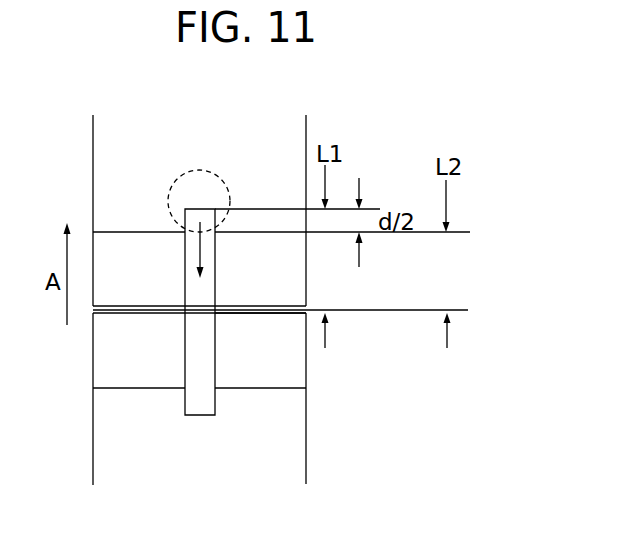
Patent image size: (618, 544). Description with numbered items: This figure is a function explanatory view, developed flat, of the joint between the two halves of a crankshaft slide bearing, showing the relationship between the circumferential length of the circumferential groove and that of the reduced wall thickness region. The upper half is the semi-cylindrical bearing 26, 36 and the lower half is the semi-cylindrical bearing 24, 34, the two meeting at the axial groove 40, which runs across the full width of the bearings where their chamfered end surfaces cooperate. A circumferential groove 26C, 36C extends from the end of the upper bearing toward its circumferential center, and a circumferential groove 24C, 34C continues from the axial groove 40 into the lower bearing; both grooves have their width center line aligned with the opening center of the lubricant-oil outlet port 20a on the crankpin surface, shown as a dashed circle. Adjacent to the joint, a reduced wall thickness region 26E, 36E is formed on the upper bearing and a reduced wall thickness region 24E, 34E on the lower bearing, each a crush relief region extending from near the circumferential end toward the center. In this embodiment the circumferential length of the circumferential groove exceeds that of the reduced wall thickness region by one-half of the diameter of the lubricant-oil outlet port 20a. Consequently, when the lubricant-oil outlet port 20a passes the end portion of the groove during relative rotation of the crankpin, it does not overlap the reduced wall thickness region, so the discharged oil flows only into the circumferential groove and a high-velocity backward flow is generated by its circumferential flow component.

The semi-cylindrical bearing 26 is at (281, 210).
The semi-cylindrical bearing 36 is at (290, 131).
The reduced wall thickness region 26E is at (280, 291).
The reduced wall thickness region 36E is at (290, 289).
The semi-cylindrical bearing 24 is at (242, 399).
The semi-cylindrical bearing 34 is at (268, 446).
The reduced wall thickness region 24E is at (321, 350).
The reduced wall thickness region 34E is at (270, 361).
The circumferential groove 26C is at (157, 226).
The circumferential groove 36C is at (184, 280).
The circumferential groove 24C is at (179, 395).
The circumferential groove 34C is at (200, 395).
The lubricant-oil outlet port 20a is at (213, 171).
The axial groove 40 is at (93, 311).